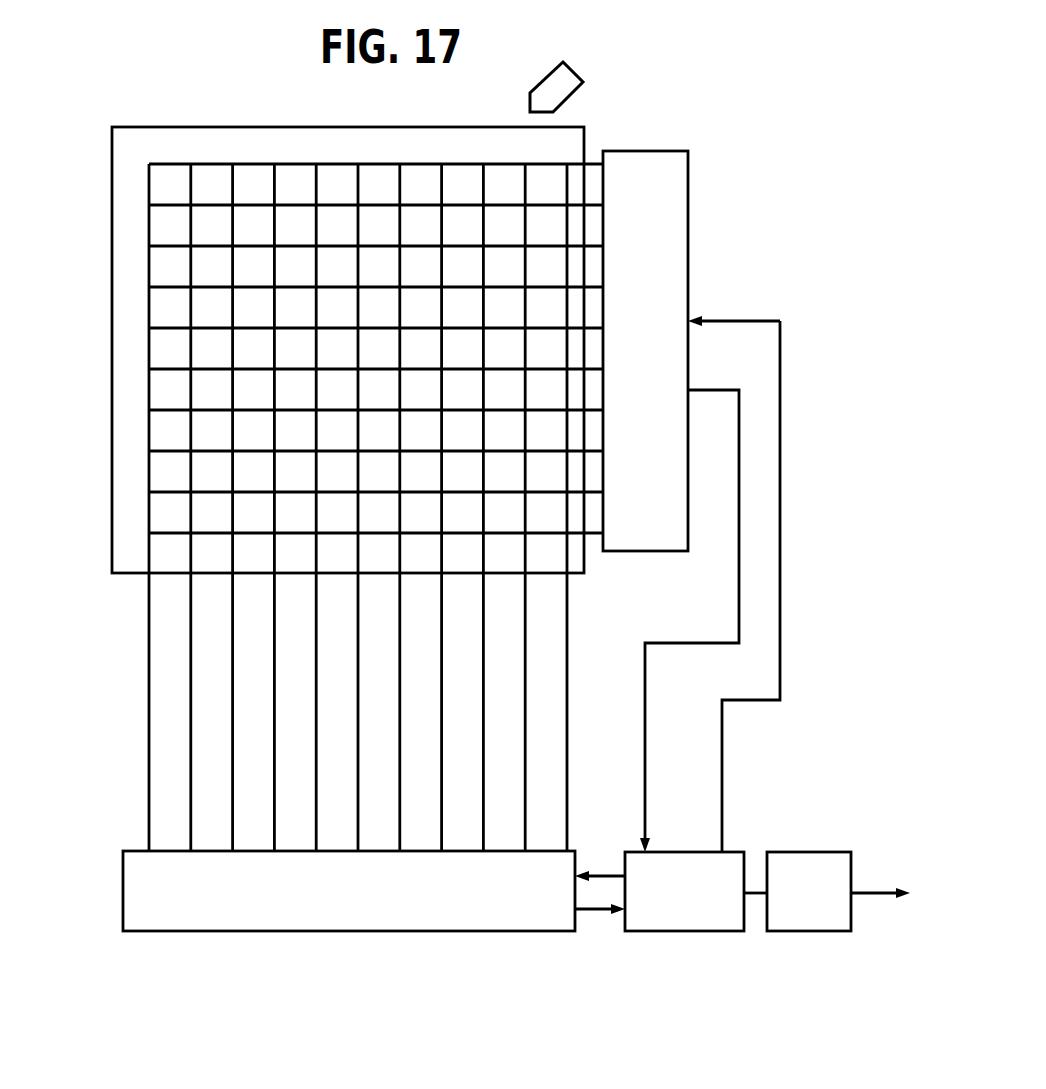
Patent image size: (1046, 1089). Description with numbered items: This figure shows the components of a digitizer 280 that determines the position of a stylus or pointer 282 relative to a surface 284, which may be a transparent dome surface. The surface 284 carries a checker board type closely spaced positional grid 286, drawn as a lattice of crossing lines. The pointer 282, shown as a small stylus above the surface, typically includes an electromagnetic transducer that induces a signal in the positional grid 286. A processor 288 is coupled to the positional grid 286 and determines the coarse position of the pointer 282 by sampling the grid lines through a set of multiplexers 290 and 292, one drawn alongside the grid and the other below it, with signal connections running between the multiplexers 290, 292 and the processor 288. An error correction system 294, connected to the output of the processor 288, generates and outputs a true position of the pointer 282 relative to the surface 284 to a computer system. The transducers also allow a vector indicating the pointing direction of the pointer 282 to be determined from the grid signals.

The digitizer 280 is at (276, 970).
The stylus or pointer 282 is at (580, 70).
The surface 284 is at (222, 127).
The positional grid 286 is at (274, 391).
The processor 288 is at (670, 933).
The multiplexer 290 is at (688, 164).
The multiplexer 292 is at (197, 933).
The error correction system 294 is at (806, 933).